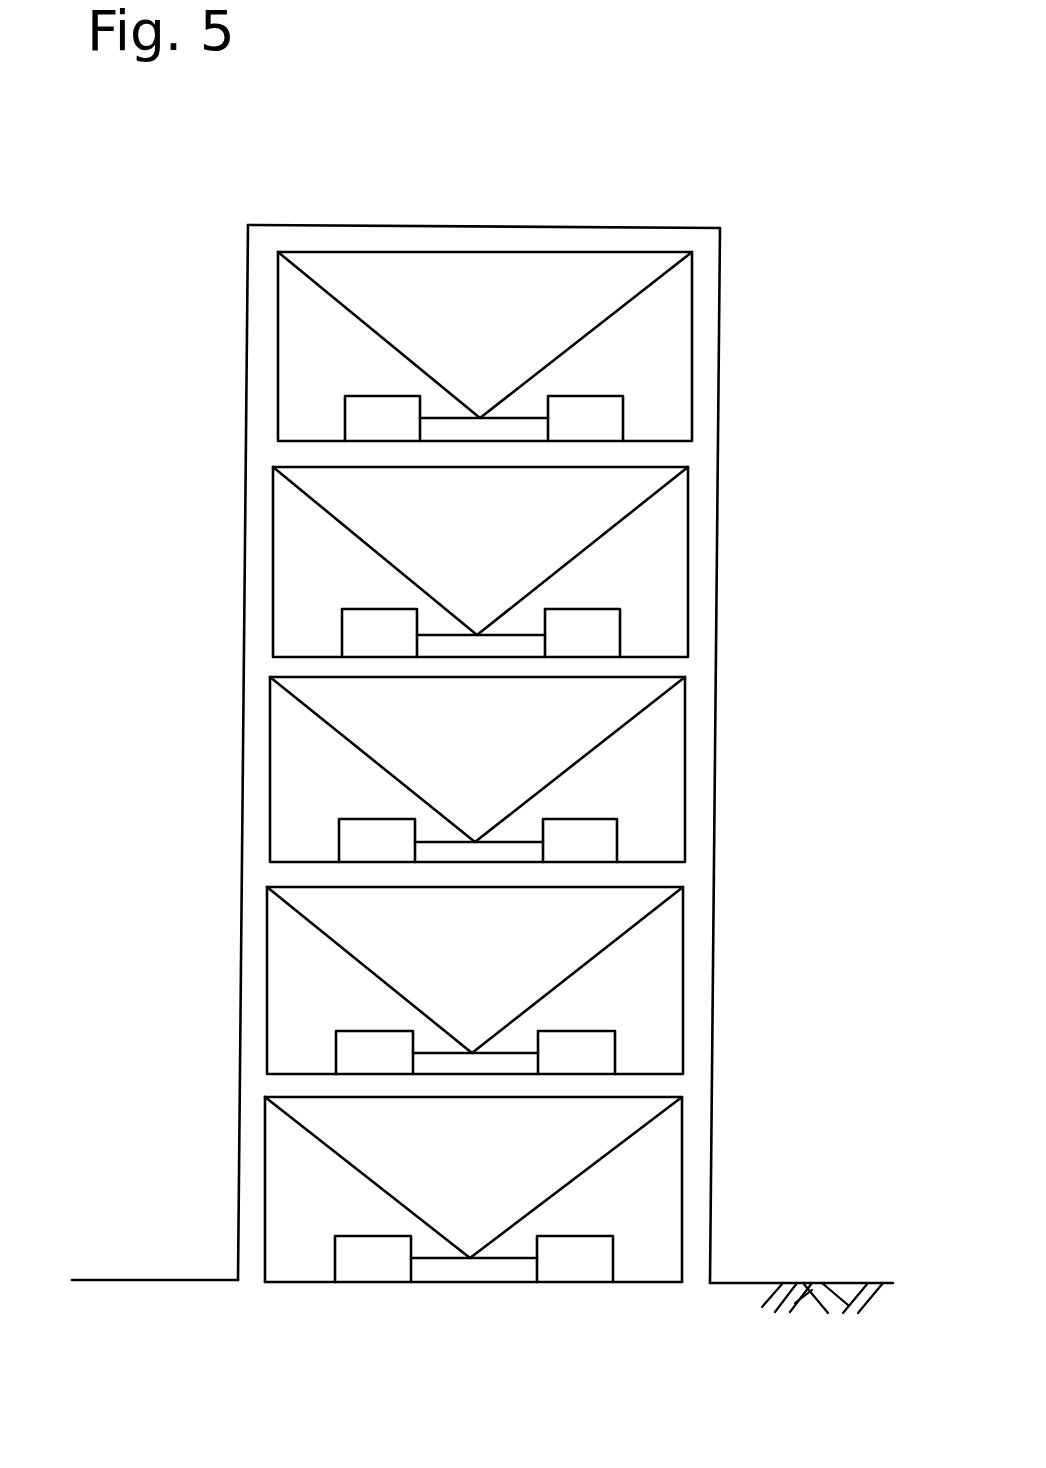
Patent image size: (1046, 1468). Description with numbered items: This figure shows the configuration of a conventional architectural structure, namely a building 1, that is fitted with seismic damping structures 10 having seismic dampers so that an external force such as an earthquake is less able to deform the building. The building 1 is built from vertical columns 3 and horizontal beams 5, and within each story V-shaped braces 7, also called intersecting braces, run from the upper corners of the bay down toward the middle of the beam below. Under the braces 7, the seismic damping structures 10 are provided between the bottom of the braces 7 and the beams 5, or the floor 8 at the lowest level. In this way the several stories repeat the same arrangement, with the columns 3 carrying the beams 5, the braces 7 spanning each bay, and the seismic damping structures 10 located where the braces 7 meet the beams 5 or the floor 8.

The building 1 is at (762, 334).
The columns 3 is at (247, 540).
The beams 5 is at (478, 711).
The V-shaped braces 7 is at (361, 537).
The floor 8 is at (652, 1282).
The seismic damping structures 10 is at (368, 625).